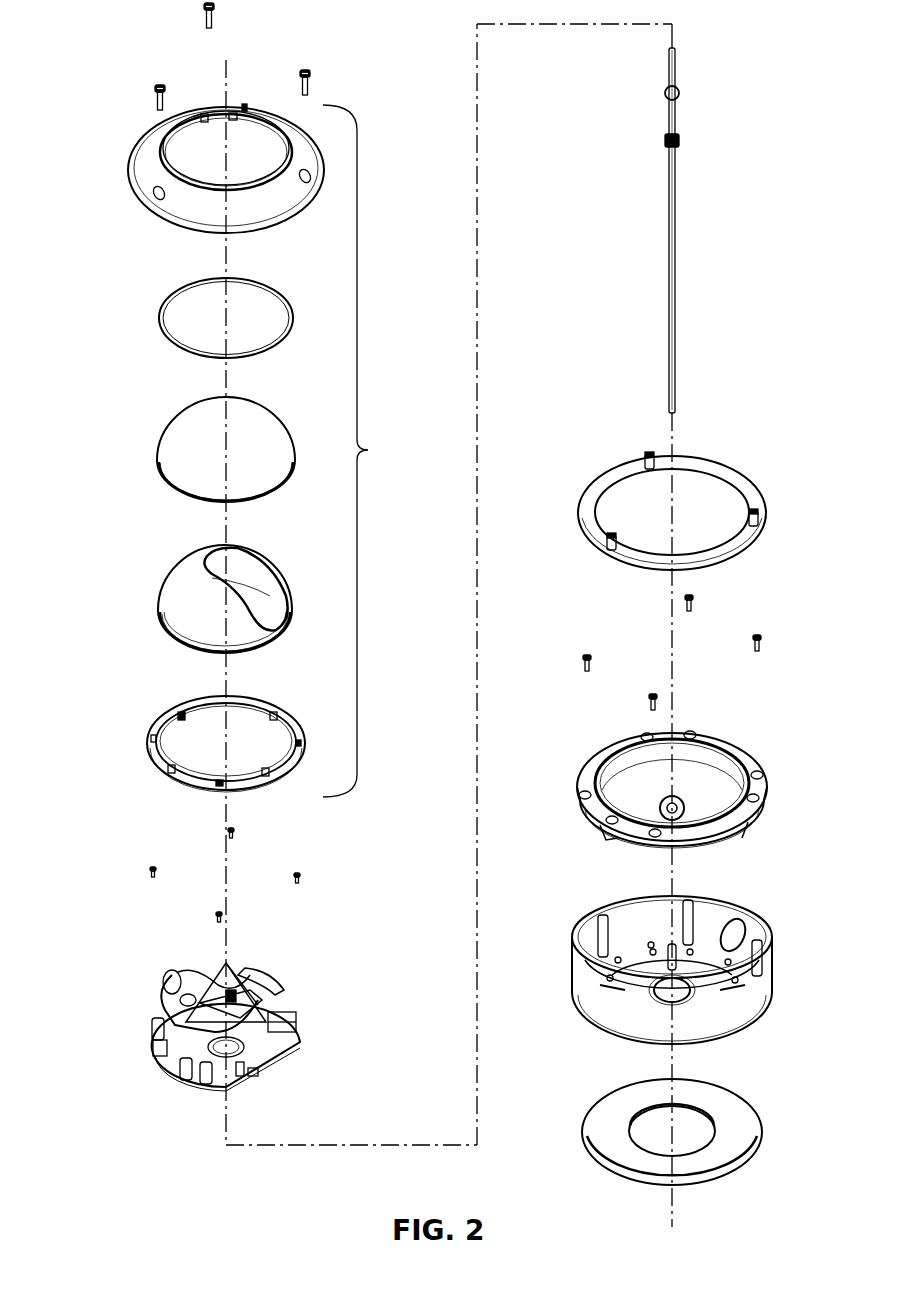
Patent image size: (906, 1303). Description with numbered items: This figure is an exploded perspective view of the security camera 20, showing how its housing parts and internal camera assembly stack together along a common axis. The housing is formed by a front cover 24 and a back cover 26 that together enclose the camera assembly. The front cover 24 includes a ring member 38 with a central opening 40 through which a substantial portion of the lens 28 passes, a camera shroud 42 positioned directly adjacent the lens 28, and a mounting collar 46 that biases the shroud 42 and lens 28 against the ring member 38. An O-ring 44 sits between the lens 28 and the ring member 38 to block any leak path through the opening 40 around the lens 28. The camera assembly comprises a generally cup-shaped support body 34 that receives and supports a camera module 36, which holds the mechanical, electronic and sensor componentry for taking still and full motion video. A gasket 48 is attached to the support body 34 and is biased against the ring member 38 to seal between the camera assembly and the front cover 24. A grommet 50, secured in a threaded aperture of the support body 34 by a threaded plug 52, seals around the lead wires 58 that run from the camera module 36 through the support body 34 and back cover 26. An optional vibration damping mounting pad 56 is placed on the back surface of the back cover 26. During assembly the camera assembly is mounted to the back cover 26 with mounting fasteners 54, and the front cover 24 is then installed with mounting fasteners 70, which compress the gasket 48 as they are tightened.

The security camera 20 is at (208, 1202).
The front cover 24 is at (366, 451).
The back cover 26 is at (588, 942).
The lens 28 is at (186, 430).
The support body 34 is at (590, 770).
The camera module 36 is at (172, 1010).
The ring member 38 is at (146, 152).
The central opening 40 is at (245, 104).
The camera shroud 42 is at (182, 586).
The O-ring 44 is at (166, 304).
The mounting collar 46 is at (158, 730).
The gasket 48 is at (592, 490).
The grommet 50 is at (665, 92).
The threaded plug 52 is at (665, 138).
The mounting fasteners 54 is at (583, 663).
The vibration damping mounting pad 56 is at (602, 1113).
The lead wires 58 is at (668, 208).
The mounting fasteners 70 is at (155, 96).